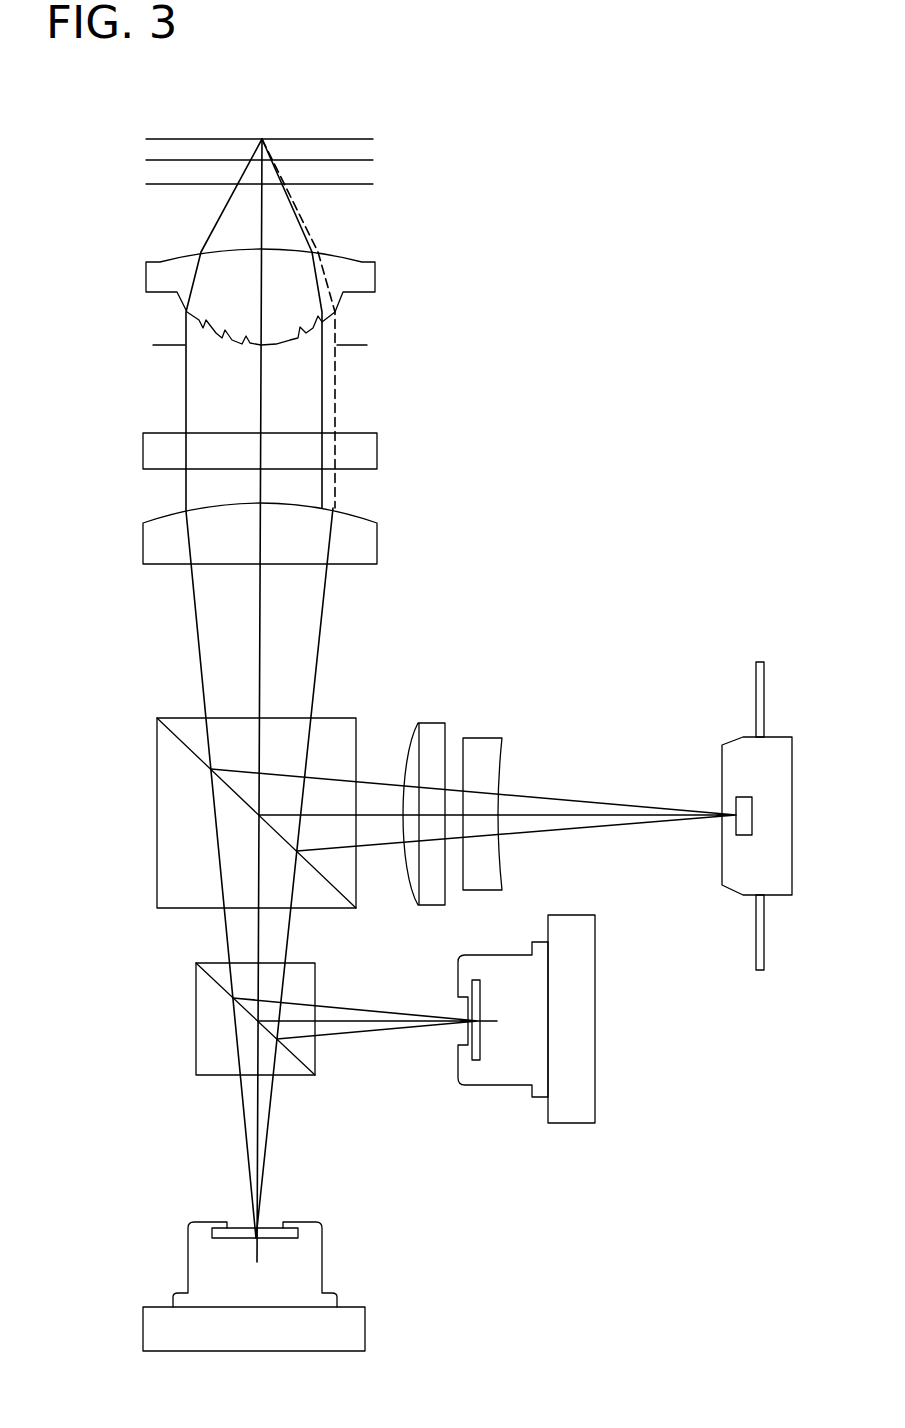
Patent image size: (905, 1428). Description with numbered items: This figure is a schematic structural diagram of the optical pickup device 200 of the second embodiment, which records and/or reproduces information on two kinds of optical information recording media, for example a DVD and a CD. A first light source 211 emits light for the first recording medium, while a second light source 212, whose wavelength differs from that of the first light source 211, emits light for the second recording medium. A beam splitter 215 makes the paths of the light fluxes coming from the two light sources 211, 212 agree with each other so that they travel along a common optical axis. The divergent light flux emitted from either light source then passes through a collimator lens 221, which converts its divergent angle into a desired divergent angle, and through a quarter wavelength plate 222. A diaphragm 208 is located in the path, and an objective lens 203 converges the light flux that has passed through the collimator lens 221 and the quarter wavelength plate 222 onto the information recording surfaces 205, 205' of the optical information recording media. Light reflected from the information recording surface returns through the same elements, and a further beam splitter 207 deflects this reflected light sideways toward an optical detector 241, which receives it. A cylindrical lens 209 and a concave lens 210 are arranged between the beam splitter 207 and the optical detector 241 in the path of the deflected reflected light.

The optical pickup device 200 is at (642, 408).
The objective lens 203 is at (375, 277).
The information recording surface 205 is at (259, 130).
The information recording surface 205' is at (262, 126).
The beam splitter 207 is at (350, 717).
The diaphragm 208 is at (367, 345).
The cylindrical lens 209 is at (432, 722).
The concave lens 210 is at (486, 737).
The first light source 211 is at (322, 1255).
The second light source 212 is at (497, 1086).
The beam splitter 215 is at (297, 1079).
The collimator lens 221 is at (378, 545).
The quarter wavelength plate 222 is at (378, 450).
The optical detector 241 is at (792, 782).